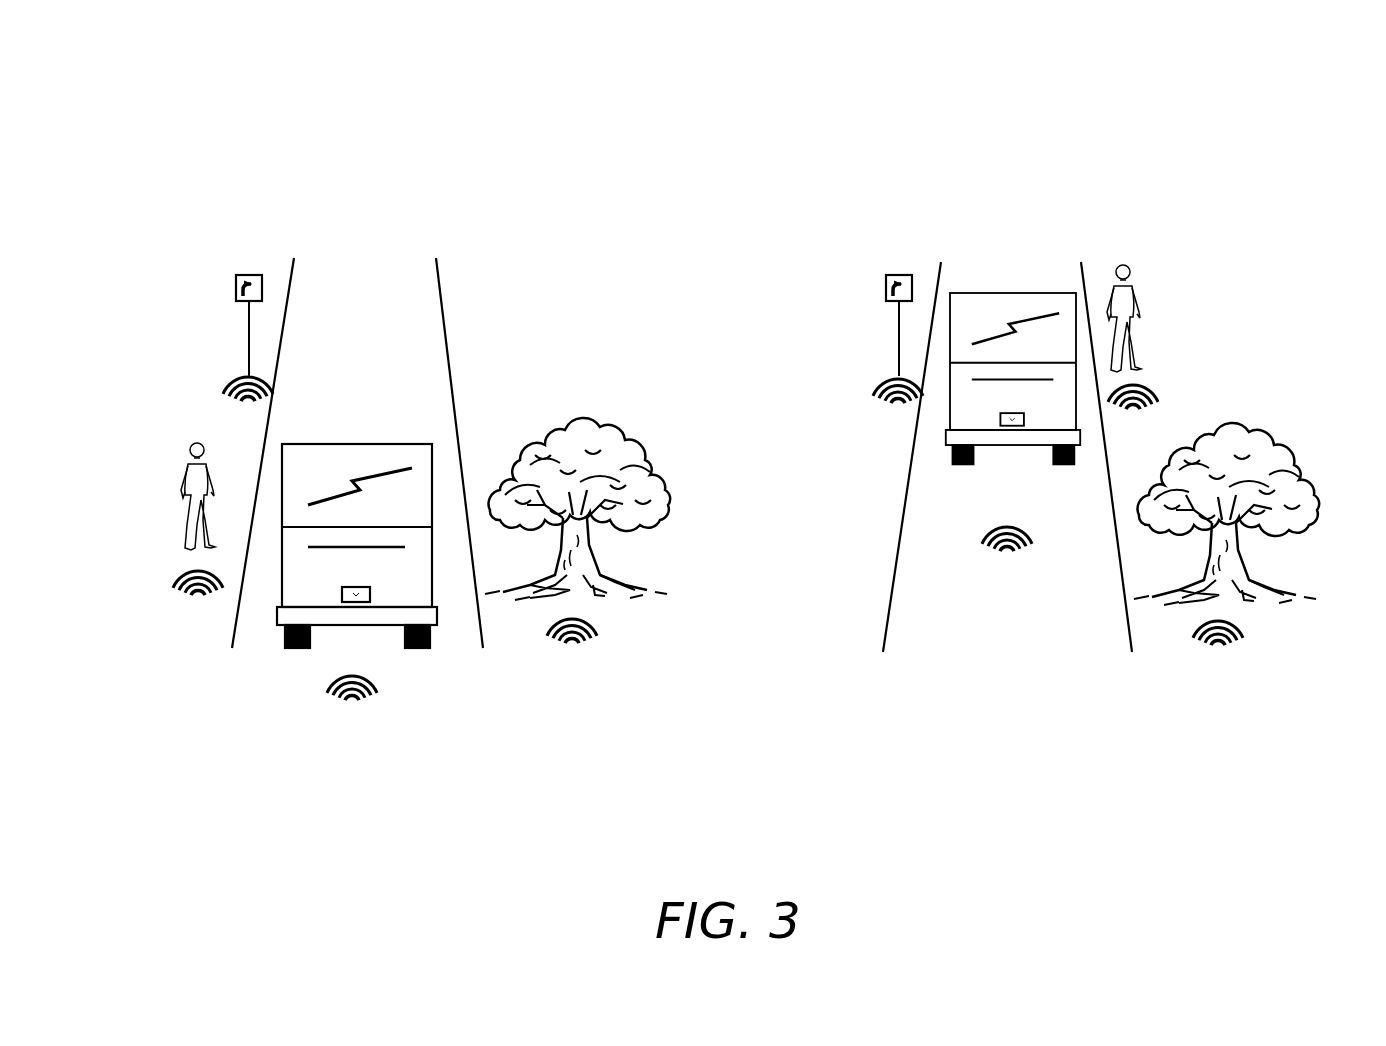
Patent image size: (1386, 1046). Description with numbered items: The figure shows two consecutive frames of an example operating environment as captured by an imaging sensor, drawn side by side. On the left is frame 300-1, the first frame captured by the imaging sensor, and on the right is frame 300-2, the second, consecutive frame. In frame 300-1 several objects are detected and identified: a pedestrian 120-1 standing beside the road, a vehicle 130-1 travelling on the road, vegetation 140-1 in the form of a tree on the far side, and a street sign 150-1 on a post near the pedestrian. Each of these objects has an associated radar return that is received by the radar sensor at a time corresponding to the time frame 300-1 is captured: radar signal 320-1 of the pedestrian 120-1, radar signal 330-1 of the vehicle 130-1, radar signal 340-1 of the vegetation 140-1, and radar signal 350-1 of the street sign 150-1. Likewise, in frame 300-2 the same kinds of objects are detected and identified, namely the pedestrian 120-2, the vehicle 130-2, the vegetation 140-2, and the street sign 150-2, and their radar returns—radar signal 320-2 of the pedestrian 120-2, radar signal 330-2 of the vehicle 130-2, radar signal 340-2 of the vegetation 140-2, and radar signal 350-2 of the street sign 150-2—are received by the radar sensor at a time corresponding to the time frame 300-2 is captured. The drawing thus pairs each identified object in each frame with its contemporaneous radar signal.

The frame 300-1 is at (286, 106).
The frame 300-2 is at (1079, 106).
The street sign 150-1 is at (249, 275).
The street sign 150-2 is at (899, 275).
The radar signal 350-1 is at (227, 389).
The radar signal 350-2 is at (897, 416).
The pedestrian 120-1 is at (191, 441).
The pedestrian 120-2 is at (1137, 269).
The radar signal 320-1 is at (196, 606).
The radar signal 320-2 is at (1151, 373).
The vehicle 130-1 is at (410, 648).
The vehicle 130-2 is at (1062, 468).
The radar signal 330-1 is at (355, 710).
The radar signal 330-2 is at (1008, 560).
The vegetation 140-1 is at (588, 432).
The vegetation 140-2 is at (1240, 434).
The radar signal 340-1 is at (573, 650).
The radar signal 340-2 is at (1222, 653).